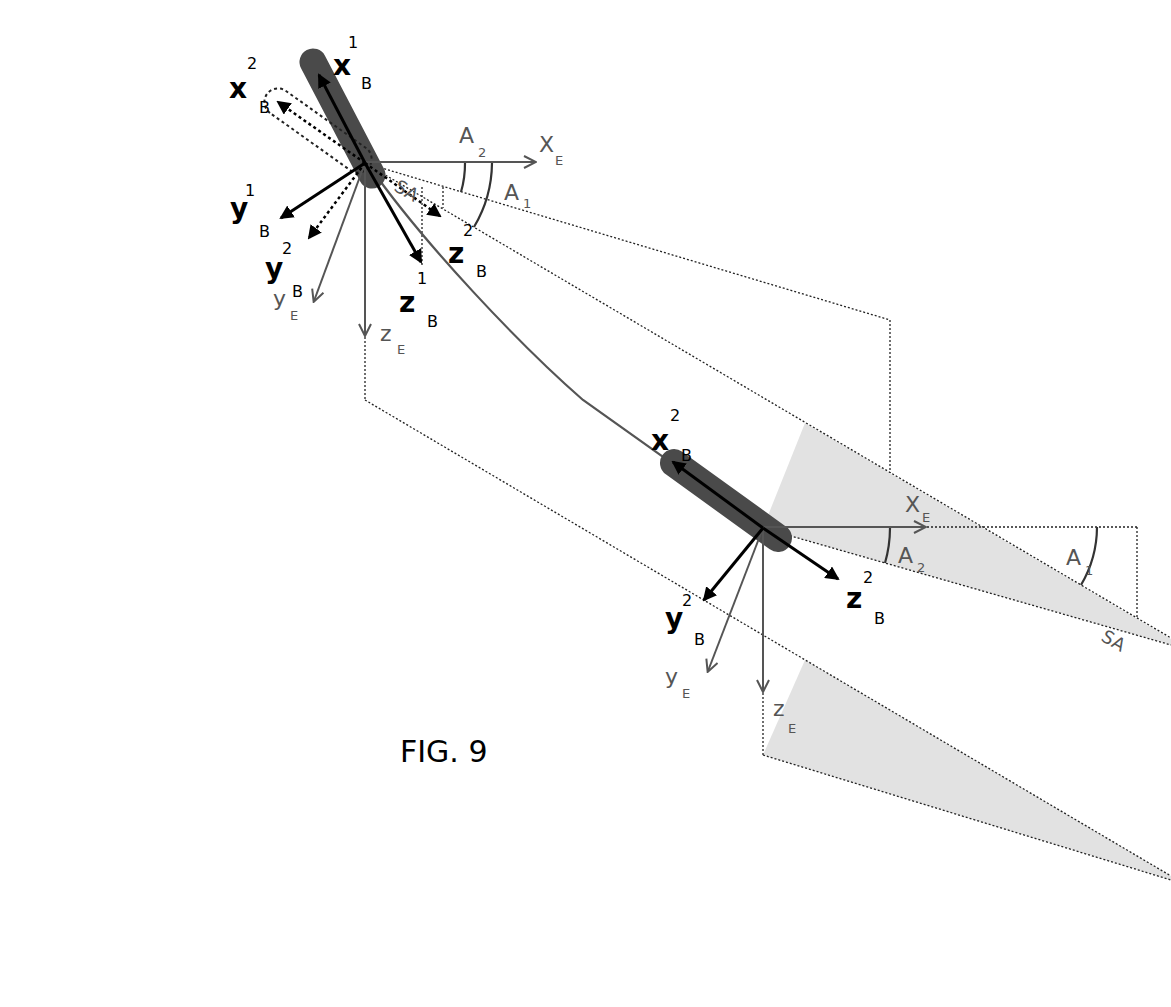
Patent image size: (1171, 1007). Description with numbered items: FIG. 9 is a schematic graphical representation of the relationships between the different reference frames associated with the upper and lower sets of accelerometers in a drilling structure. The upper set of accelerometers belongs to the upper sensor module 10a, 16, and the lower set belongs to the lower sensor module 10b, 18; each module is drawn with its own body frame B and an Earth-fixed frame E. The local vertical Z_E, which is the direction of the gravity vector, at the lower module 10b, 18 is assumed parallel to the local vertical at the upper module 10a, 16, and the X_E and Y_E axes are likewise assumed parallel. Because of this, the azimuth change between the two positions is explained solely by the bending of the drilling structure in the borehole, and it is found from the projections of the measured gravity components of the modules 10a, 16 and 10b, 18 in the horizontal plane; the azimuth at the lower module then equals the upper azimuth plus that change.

The first vehicle (towing body) 10a is at (446, 95).
The upper sensor module 16 is at (414, 101).
The second vehicle (towed body) 10b is at (810, 400).
The sensor module 18 is at (737, 448).